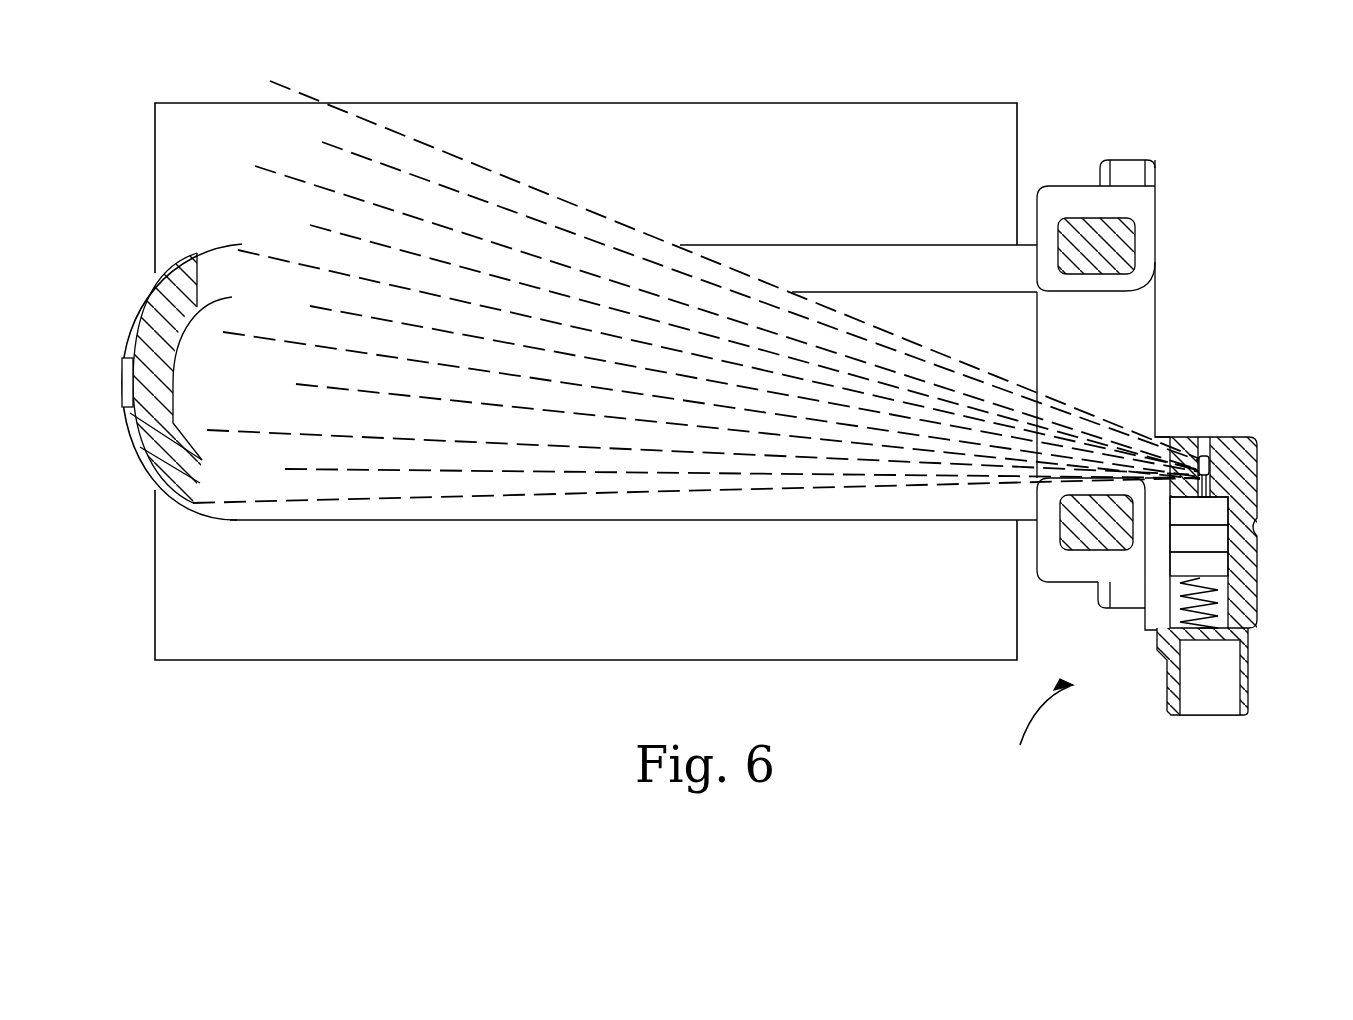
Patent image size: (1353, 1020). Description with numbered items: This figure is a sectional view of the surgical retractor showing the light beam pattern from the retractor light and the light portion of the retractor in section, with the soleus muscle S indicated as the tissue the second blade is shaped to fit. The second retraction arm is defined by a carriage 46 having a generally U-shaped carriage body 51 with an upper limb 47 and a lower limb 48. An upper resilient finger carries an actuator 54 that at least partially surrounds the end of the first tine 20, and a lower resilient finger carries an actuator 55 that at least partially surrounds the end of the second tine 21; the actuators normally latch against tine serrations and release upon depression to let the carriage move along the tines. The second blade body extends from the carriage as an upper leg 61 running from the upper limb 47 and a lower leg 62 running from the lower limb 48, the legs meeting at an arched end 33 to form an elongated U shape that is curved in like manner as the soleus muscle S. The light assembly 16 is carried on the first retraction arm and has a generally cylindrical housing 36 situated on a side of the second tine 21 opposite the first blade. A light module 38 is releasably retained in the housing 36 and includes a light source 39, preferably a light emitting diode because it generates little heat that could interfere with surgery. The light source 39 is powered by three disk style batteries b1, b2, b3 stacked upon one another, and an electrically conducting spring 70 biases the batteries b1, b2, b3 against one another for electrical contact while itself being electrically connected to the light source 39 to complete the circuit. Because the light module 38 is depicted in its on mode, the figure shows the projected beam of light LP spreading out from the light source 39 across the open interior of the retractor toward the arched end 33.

The light assembly 16 is at (1037, 726).
The first tine 20 is at (1115, 240).
The second tine 21 is at (1062, 520).
The arched end 33 is at (124, 350).
The housing 36 is at (1257, 455).
The light module 38 is at (1245, 690).
The light source 39 is at (1207, 454).
The carriage 46 is at (1156, 336).
The upper limb 47 is at (1069, 198).
The lower limb 48 is at (1068, 582).
The carriage body 51 is at (1108, 363).
The actuator 54 is at (1124, 166).
The actuator 55 is at (1126, 610).
The upper leg 61 is at (850, 260).
The lower leg 62 is at (803, 506).
The electrically conducting spring 70 is at (1212, 604).
The disk style battery b1 is at (1216, 565).
The disk style battery b2 is at (1215, 540).
The disk style battery b3 is at (1213, 508).
The soleus muscle S is at (668, 183).
The beam of light LP is at (556, 373).